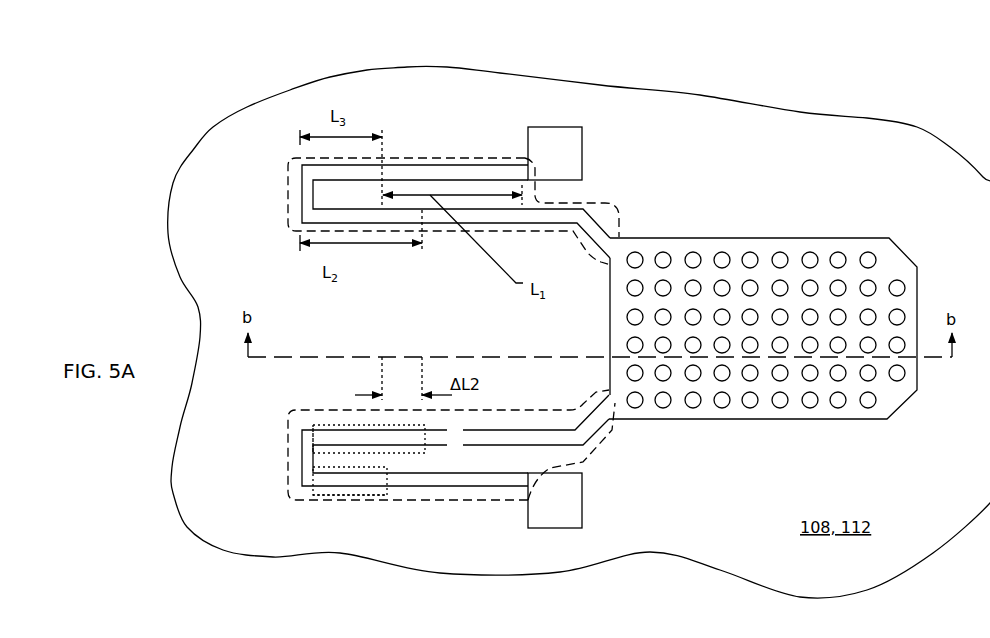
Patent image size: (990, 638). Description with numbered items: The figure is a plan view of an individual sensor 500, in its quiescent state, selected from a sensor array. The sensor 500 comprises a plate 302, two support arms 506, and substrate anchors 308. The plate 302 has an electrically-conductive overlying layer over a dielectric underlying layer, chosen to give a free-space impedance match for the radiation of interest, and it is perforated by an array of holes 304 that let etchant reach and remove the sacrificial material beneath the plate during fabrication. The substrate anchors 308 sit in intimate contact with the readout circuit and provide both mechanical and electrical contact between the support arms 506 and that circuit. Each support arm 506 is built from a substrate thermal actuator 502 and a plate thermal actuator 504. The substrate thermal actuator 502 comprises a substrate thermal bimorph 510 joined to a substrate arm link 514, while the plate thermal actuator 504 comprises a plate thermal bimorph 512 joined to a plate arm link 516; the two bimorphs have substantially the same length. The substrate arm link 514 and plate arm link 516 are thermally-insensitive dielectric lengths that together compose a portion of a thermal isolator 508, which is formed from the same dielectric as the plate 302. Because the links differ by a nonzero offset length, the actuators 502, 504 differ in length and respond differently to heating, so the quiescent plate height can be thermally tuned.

The sensor 500 is at (367, 93).
The plate 302 is at (887, 238).
The holes 304 is at (873, 403).
The substrate anchors 308 is at (553, 125).
The substrate thermal bimorph 510 is at (448, 175).
The thermal isolator 508 is at (307, 195).
The plate thermal bimorph 512 is at (482, 215).
The support arms 506 is at (430, 159).
The plate thermal actuator 504 is at (365, 425).
The plate arm link 516 is at (312, 432).
The substrate arm link 514 is at (343, 482).
The substrate thermal actuator 502 is at (365, 497).